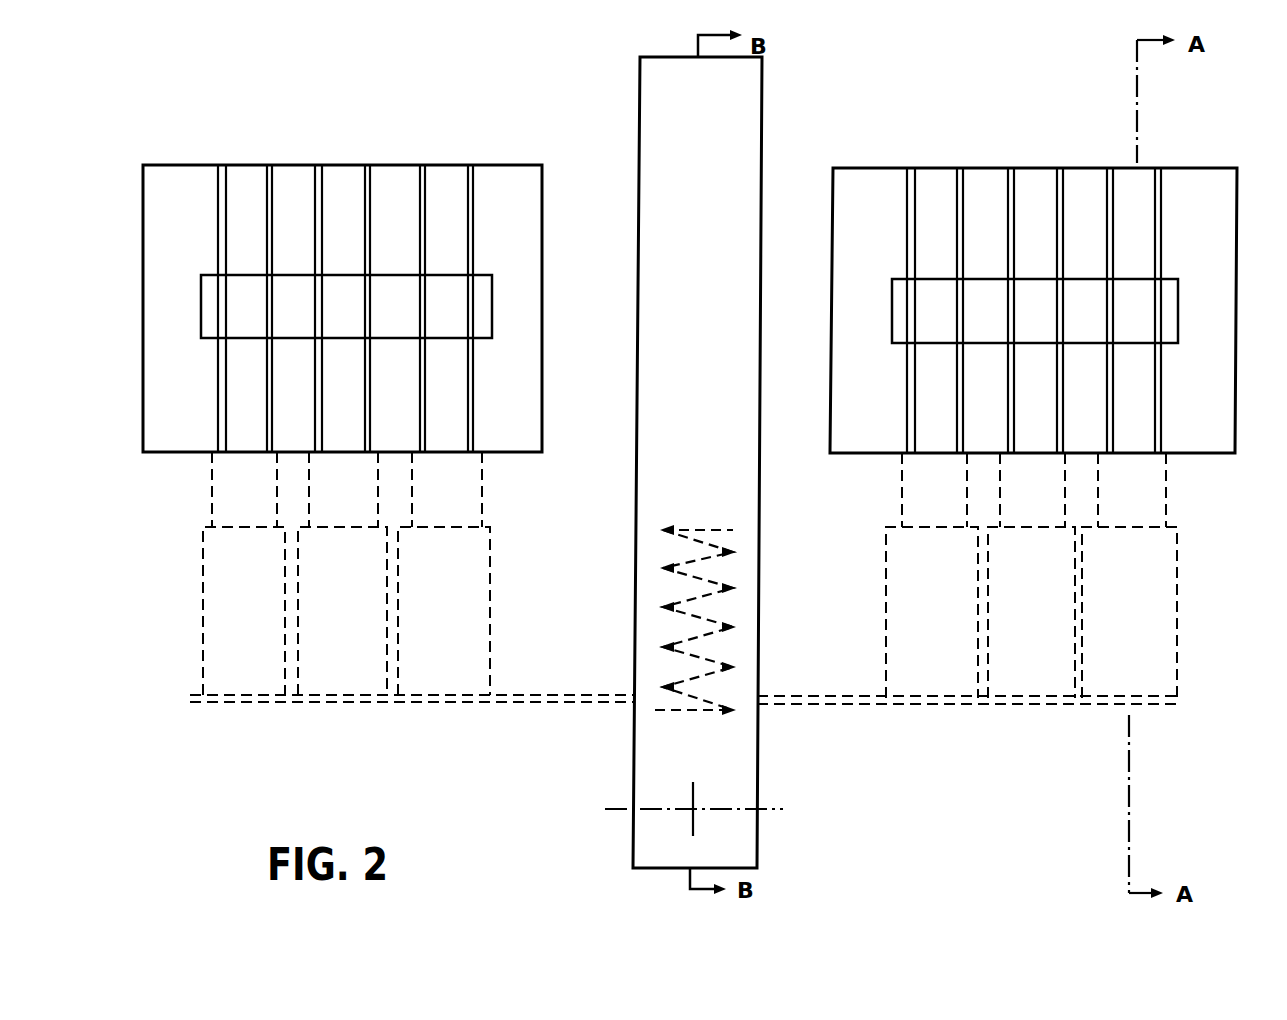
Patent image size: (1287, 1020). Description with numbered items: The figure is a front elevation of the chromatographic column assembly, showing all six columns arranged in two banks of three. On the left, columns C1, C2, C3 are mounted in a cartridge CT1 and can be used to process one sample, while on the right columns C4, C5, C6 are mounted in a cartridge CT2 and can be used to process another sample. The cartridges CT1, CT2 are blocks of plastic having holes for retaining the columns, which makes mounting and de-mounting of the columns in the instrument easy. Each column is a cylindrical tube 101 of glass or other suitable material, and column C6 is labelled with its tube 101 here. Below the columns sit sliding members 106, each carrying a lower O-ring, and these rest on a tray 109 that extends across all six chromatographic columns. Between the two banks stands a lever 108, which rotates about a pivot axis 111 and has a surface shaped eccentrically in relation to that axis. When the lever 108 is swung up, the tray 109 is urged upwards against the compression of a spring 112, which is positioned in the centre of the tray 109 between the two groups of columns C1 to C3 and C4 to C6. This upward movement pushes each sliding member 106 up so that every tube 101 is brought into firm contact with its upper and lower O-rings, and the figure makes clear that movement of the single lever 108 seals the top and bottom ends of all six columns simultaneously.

The cylindrical tube 101 is at (1170, 181).
The sliding member 106 is at (1160, 617).
The lever 108 is at (653, 413).
The tray 109 is at (510, 692).
The pivot axis 111 is at (770, 808).
The spring 112 is at (715, 580).
The column C1 is at (240, 218).
The column C2 is at (342, 197).
The column C3 is at (450, 388).
The column C4 is at (932, 185).
The column C5 is at (1037, 215).
The column C6 is at (1138, 433).
The cartridge CT1 is at (483, 297).
The cartridge CT2 is at (897, 303).